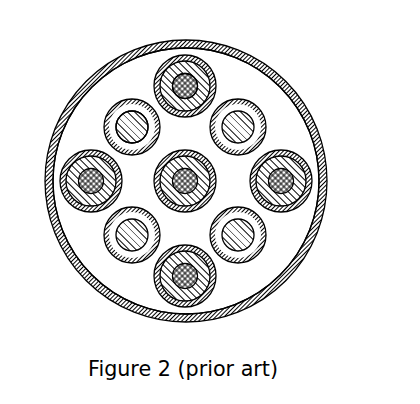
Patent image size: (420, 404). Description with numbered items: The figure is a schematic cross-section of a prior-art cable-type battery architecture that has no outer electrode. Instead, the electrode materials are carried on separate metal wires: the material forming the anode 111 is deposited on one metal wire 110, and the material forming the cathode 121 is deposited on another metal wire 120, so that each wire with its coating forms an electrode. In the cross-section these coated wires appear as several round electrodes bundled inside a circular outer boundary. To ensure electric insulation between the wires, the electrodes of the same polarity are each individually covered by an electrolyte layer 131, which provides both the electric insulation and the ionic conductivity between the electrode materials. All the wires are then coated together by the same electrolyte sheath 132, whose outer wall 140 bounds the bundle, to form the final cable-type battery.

The metal wire 110 is at (173, 56).
The anode 111 is at (189, 73).
The metal wire 120 is at (103, 113).
The cathode 121 is at (118, 100).
The electrolyte layer 131 is at (214, 50).
The electrolyte sheath 132 is at (286, 93).
The outer housing 140 is at (270, 68).